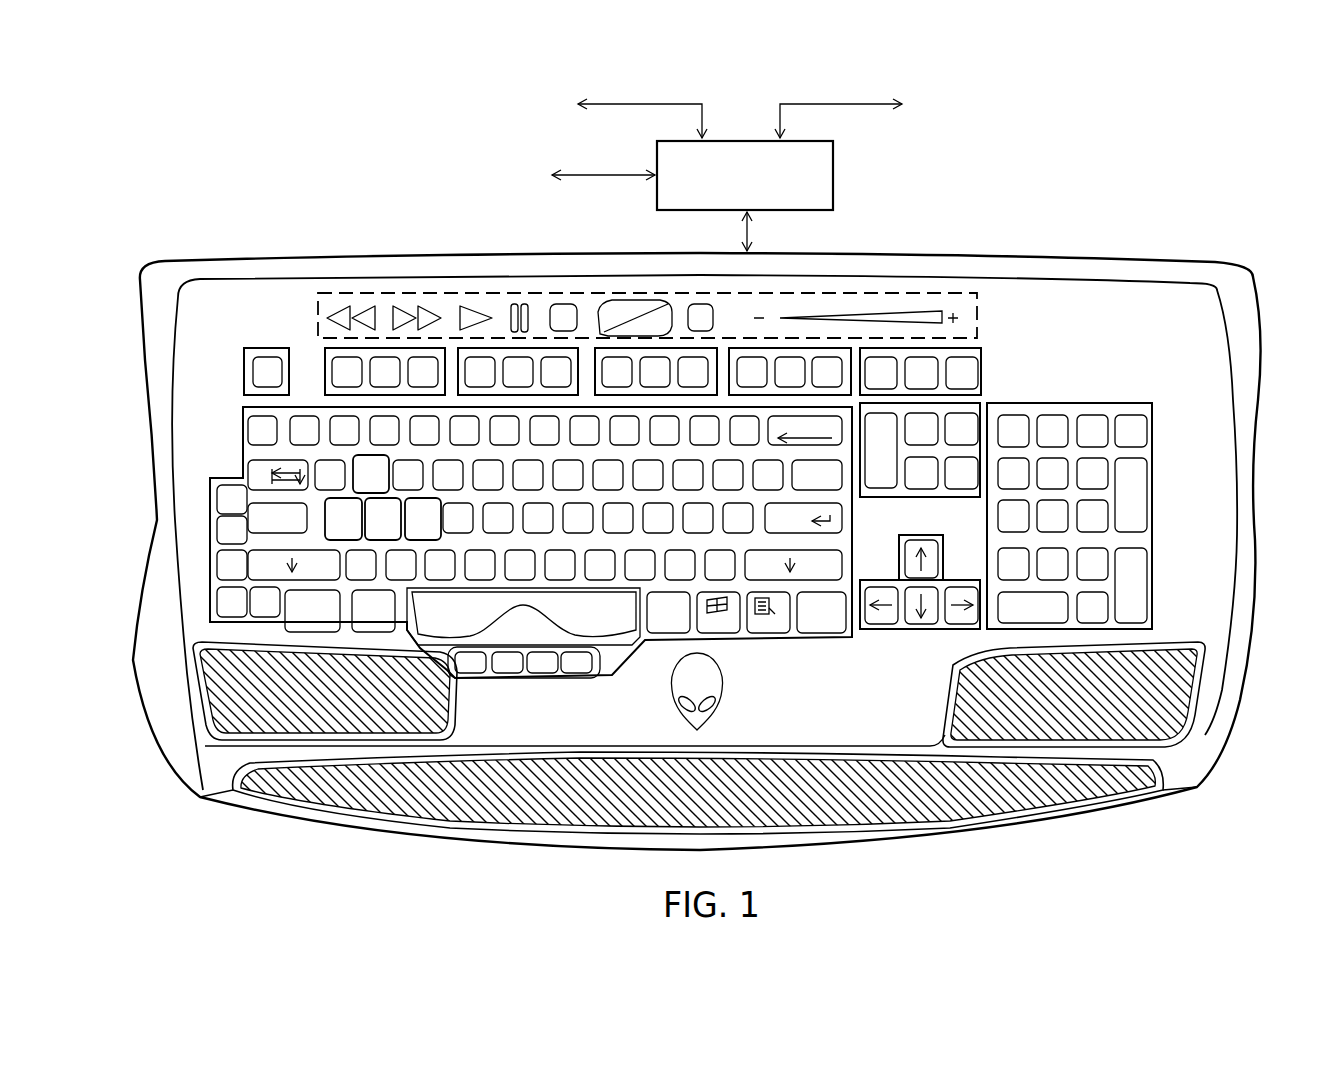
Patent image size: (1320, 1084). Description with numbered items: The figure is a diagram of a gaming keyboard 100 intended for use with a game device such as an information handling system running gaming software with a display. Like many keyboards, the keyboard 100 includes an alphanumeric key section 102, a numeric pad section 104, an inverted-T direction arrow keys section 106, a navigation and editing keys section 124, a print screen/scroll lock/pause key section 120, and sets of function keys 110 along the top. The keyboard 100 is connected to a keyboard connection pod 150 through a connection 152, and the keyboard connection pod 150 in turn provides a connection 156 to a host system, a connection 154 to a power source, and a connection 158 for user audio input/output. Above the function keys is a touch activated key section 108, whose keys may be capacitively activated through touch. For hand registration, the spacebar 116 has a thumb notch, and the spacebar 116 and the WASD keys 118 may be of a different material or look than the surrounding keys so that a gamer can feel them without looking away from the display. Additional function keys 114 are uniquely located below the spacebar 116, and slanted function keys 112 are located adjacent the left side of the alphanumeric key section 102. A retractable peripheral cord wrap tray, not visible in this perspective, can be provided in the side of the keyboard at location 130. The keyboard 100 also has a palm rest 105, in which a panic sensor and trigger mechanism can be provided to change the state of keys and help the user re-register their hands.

The keyboard 100 is at (708, 501).
The alphanumeric key section 102 is at (482, 510).
The numeric pad section 104 is at (1077, 402).
The palm rest 105 is at (225, 720).
The inverted-T direction arrow keys section 106 is at (922, 633).
The touch activated key section 108 is at (408, 293).
The function keys 110 is at (753, 345).
The slanted function keys 112 is at (210, 537).
The function keys 114 is at (525, 674).
The spacebar 116 is at (605, 625).
The WASD keys 118 is at (345, 458).
The print screen/scroll lock/pause key section 120 is at (963, 345).
The navigation and editing keys section 124 is at (978, 402).
The location of retractable peripheral cord wrap tray 130 is at (1240, 560).
The keyboard connection pod 150 is at (860, 184).
The connection 152 is at (749, 233).
The connection 154 is at (627, 108).
The connection 156 is at (839, 108).
The connection 158 is at (600, 178).